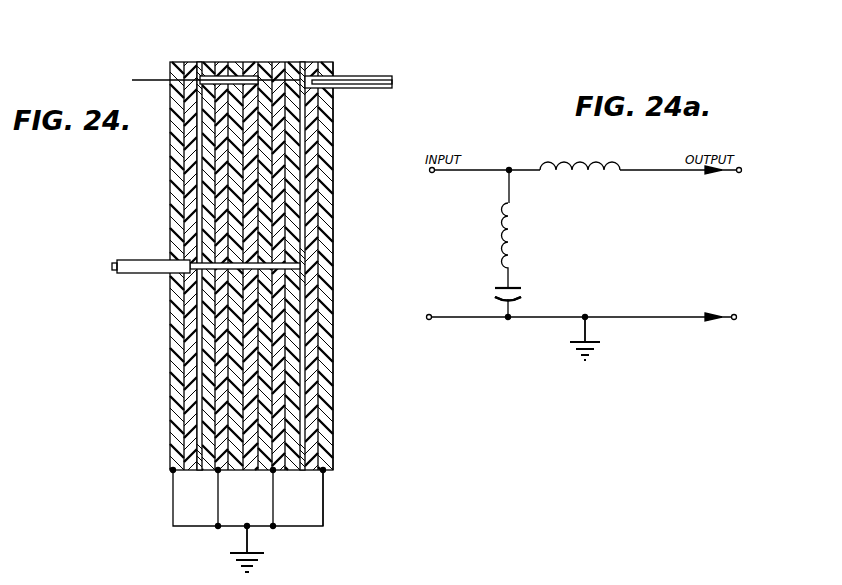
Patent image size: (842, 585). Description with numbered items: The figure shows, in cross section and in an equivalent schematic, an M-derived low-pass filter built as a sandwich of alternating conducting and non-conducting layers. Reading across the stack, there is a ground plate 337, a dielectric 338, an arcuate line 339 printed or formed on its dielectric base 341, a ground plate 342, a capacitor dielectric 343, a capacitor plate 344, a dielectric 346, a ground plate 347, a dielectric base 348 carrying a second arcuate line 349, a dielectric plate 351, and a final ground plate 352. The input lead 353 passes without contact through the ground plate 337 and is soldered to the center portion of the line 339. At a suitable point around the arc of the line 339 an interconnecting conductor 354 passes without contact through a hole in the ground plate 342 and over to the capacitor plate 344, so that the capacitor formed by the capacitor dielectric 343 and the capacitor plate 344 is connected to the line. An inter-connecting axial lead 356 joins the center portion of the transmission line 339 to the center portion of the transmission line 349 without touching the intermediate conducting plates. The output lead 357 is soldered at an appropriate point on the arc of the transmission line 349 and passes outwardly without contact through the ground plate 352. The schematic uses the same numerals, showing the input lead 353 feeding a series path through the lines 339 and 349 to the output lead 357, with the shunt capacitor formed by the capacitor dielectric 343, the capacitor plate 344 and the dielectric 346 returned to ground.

In FIG. 24, the ground plate 337 is at (177, 166).
In FIG. 24, the dielectric 338 is at (186, 205).
In FIG. 24, the arcuate line 339 is at (198, 62).
In FIG. 24A, the arcuate line 339 is at (514, 228).
In FIG. 24, the dielectric base 341 is at (211, 62).
In FIG. 24, the ground plate 342 is at (227, 62).
In FIG. 24, the capacitor dielectric 343 is at (226, 470).
In FIG. 24A, the capacitor dielectric 343 is at (520, 295).
In FIG. 24, the capacitor plate 344 is at (252, 62).
In FIG. 24A, the capacitor plate 344 is at (512, 290).
In FIG. 24, the dielectric 346 is at (262, 471).
In FIG. 24A, the dielectric 346 is at (563, 289).
In FIG. 24, the ground plate 347 is at (284, 62).
In FIG. 24, the dielectric base 348 is at (288, 471).
In FIG. 24, the arcuate line 349 is at (301, 440).
In FIG. 24A, the arcuate line 349 is at (562, 166).
In FIG. 24, the dielectric plate 351 is at (312, 378).
In FIG. 24, the ground plate 352 is at (325, 291).
In FIG. 24, the input lead 353 is at (117, 267).
In FIG. 24A, the input lead 353 is at (466, 172).
In FIG. 24, the interconnecting conductor 354 is at (198, 79).
In FIG. 24, the inter-connecting axial lead 356 is at (306, 255).
In FIG. 24, the output lead 357 is at (394, 82).
In FIG. 24A, the output lead 357 is at (640, 170).